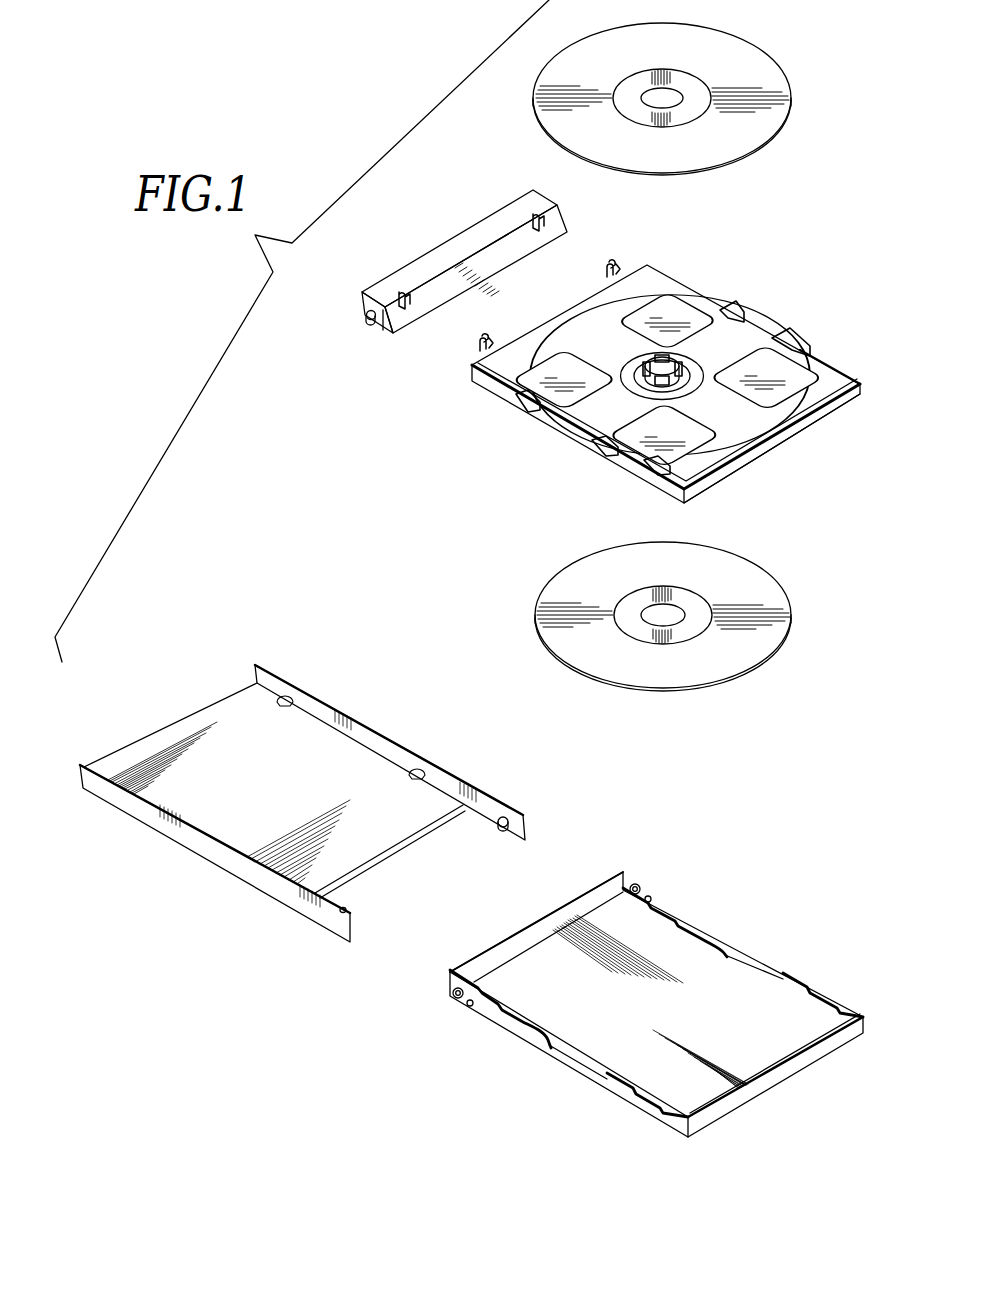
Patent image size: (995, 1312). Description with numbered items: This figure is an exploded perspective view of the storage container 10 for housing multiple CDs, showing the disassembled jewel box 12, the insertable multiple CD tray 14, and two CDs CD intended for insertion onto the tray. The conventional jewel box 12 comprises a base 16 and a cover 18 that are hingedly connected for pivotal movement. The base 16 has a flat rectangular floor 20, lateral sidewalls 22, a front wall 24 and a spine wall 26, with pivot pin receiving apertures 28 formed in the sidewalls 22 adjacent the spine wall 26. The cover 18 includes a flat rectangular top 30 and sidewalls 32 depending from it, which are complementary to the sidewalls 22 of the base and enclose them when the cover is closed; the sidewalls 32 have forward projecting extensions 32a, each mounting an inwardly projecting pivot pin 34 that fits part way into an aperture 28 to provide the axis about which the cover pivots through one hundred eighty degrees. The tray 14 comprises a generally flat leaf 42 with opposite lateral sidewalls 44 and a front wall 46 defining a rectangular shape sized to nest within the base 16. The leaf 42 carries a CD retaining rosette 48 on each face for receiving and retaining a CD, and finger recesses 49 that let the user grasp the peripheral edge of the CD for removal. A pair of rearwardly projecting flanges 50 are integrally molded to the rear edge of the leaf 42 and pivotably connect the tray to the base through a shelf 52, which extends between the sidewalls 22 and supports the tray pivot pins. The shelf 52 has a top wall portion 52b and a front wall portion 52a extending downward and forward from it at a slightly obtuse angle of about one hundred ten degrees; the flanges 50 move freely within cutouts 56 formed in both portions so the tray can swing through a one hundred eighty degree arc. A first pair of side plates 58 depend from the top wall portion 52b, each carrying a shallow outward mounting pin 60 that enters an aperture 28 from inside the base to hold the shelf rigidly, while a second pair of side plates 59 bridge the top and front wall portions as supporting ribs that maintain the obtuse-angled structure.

The storage container 10 is at (374, 452).
The jewel box 12 is at (322, 1058).
The multiple CD tray 14 is at (812, 207).
The base 16 is at (620, 997).
The cover 18 is at (310, 812).
The floor 20 is at (652, 1019).
The lateral sidewalls 22 is at (717, 937).
The front wall 24 is at (780, 1073).
The spine wall 26 is at (584, 912).
The pivot pin receiving apertures 28 is at (640, 883).
The top 30 is at (273, 792).
The sidewalls 32 is at (337, 720).
The forward projecting extensions 32a is at (490, 812).
The pivot pin 34 is at (500, 827).
The leaf 42 is at (650, 371).
The lateral sidewalls 44 is at (700, 293).
The front wall 46 is at (802, 428).
The CD retaining rosette 48 is at (683, 380).
The finger recesses 49 is at (766, 377).
The rearwardly projecting flanges 50 is at (606, 272).
The shelf 52 is at (459, 274).
The front wall portion 52a is at (503, 252).
The top wall portion 52b is at (430, 260).
The cutouts 56 is at (546, 224).
The side plates 58 is at (362, 294).
The side plates 59 is at (383, 327).
The mounting pin 60 is at (367, 320).
The element CD is at (753, 67).